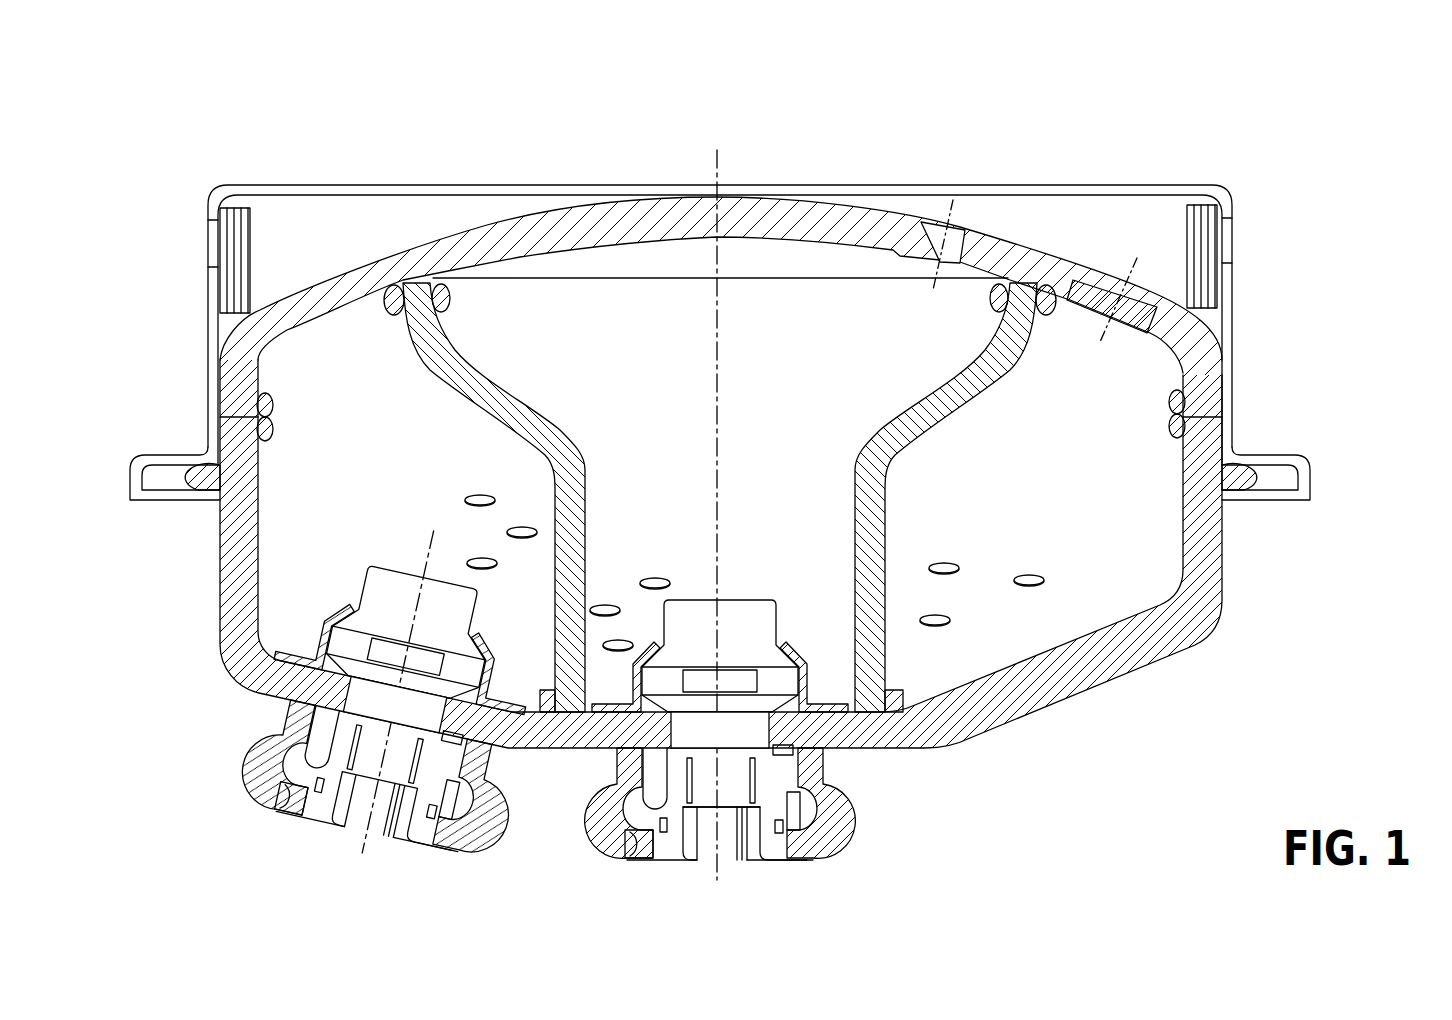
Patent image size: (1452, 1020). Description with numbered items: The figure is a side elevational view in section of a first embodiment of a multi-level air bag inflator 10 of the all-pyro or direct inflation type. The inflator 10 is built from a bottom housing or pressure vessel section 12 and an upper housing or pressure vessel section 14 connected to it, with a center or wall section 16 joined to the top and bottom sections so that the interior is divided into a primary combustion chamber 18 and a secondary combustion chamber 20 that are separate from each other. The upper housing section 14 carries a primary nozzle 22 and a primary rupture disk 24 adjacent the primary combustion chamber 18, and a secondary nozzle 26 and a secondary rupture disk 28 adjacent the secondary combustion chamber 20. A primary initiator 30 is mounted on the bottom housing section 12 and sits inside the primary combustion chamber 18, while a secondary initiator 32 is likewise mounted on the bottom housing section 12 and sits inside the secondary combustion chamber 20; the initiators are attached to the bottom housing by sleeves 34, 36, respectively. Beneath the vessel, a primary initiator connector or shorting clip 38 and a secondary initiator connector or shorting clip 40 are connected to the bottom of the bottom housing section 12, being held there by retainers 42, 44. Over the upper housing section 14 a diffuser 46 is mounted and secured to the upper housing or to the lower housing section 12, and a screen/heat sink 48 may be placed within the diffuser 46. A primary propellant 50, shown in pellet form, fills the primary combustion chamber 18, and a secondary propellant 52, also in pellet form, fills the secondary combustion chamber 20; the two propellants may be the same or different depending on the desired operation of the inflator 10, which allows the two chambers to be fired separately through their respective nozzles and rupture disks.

The air bag inflator 10 is at (176, 378).
The bottom housing or pressure vessel section 12 is at (1108, 658).
The upper housing or pressure vessel section 14 is at (570, 223).
The center or wall section 16 is at (878, 490).
The primary combustion chamber 18 is at (328, 419).
The secondary combustion chamber 20 is at (626, 404).
The primary nozzle 22 is at (1160, 258).
The primary rupture disk 24 is at (1127, 340).
The secondary nozzle 26 is at (960, 233).
The secondary rupture disk 28 is at (933, 263).
The primary initiator 30 is at (405, 583).
The secondary initiator 32 is at (750, 605).
The sleeve 34 is at (340, 607).
The sleeve 36 is at (812, 667).
The primary initiator connector or shorting clip 38 is at (313, 807).
The secondary initiator connector or shorting clip 40 is at (779, 850).
The retainer 42 is at (497, 792).
The second connector retainer 44 is at (860, 817).
The diffuser 46 is at (780, 188).
The screen/heat sink 48 is at (1202, 283).
The primary propellant 50 is at (522, 527).
The secondary propellant 52 is at (608, 605).